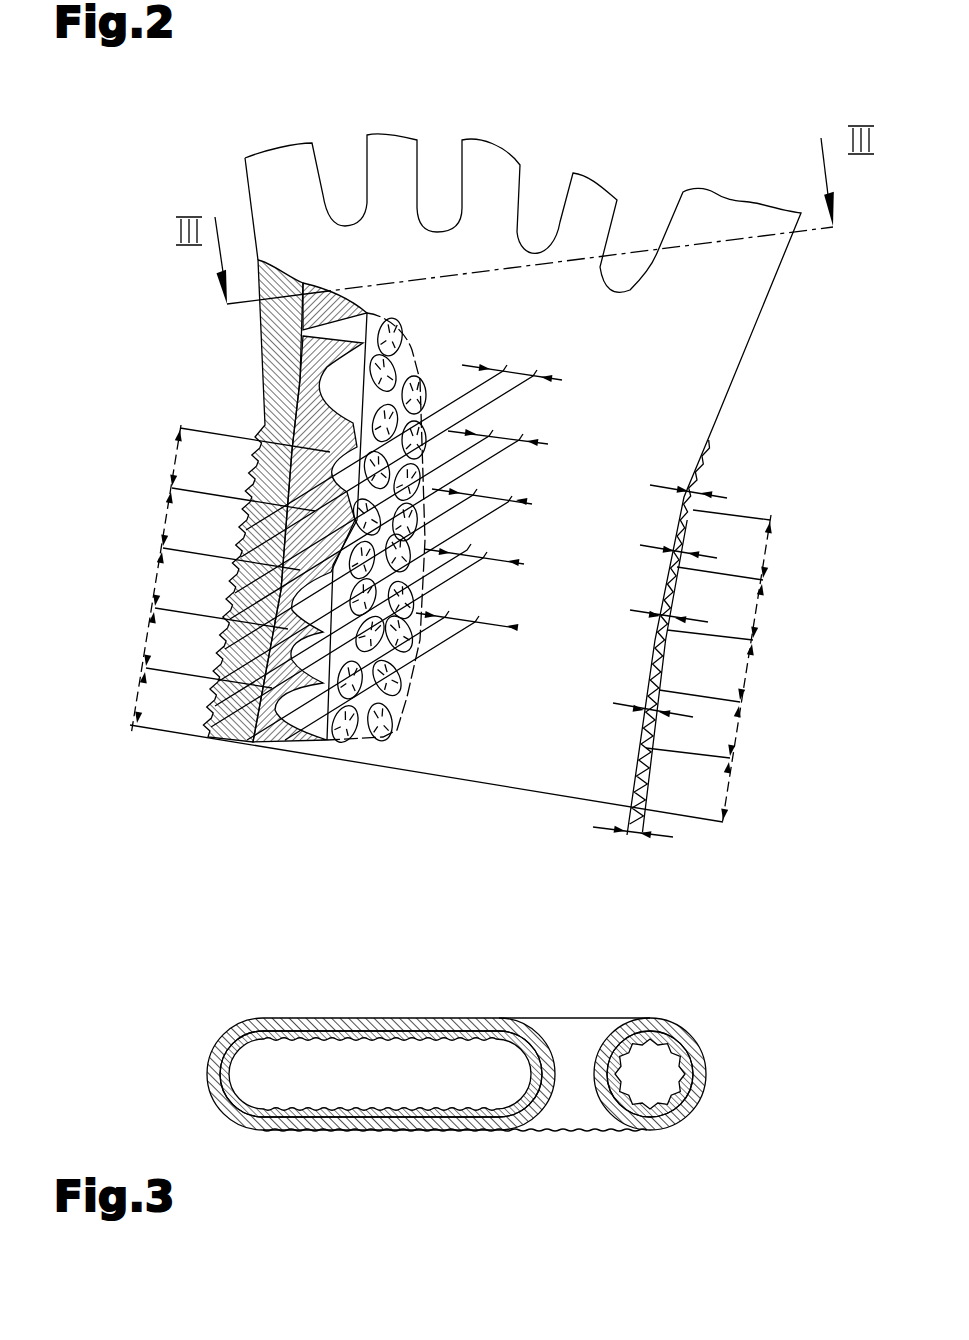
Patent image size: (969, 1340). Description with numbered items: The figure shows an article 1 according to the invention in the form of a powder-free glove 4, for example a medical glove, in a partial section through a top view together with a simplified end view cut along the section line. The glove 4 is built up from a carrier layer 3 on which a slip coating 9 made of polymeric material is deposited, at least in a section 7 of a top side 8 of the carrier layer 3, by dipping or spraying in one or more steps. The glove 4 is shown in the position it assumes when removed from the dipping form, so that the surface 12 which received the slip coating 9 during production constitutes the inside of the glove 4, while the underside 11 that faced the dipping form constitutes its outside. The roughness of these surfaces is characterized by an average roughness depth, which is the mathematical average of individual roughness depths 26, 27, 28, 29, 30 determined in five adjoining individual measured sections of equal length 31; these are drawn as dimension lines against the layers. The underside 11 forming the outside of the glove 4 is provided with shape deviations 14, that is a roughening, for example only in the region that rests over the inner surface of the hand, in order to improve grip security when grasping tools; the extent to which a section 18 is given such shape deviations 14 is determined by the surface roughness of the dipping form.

In FIG. 2, the article 1 is at (728, 58).
In FIG. 3, the article 1 is at (204, 902).
In FIG. 2, the carrier layer 3 is at (262, 345).
In FIG. 3, the carrier layer 3 is at (222, 1030).
In FIG. 2, the glove 4 is at (655, 152).
In FIG. 3, the glove 4 is at (197, 958).
In FIG. 3, the section 7 is at (375, 1075).
In FIG. 3, the top side 8 is at (410, 1044).
In FIG. 2, the slip coating 9 is at (286, 752).
In FIG. 3, the slip coating 9 is at (250, 1024).
In FIG. 2, the underside 11 is at (268, 387).
In FIG. 3, the underside 11 is at (492, 1136).
In FIG. 2, the surface 12 is at (380, 737).
In FIG. 3, the surface 12 is at (318, 1096).
In FIG. 3, the shape deviations 14 is at (500, 1104).
In FIG. 3, the section 18 is at (365, 1152).
In FIG. 2, the individual roughness depth 26 is at (490, 620).
In FIG. 2, the individual roughness depth 27 is at (498, 555).
In FIG. 2, the individual roughness depth 28 is at (478, 492).
In FIG. 2, the individual roughness depth 29 is at (494, 432).
In FIG. 2, the individual roughness depth 30 is at (508, 366).
In FIG. 2, the individual measured section of equal length 31 is at (176, 458).